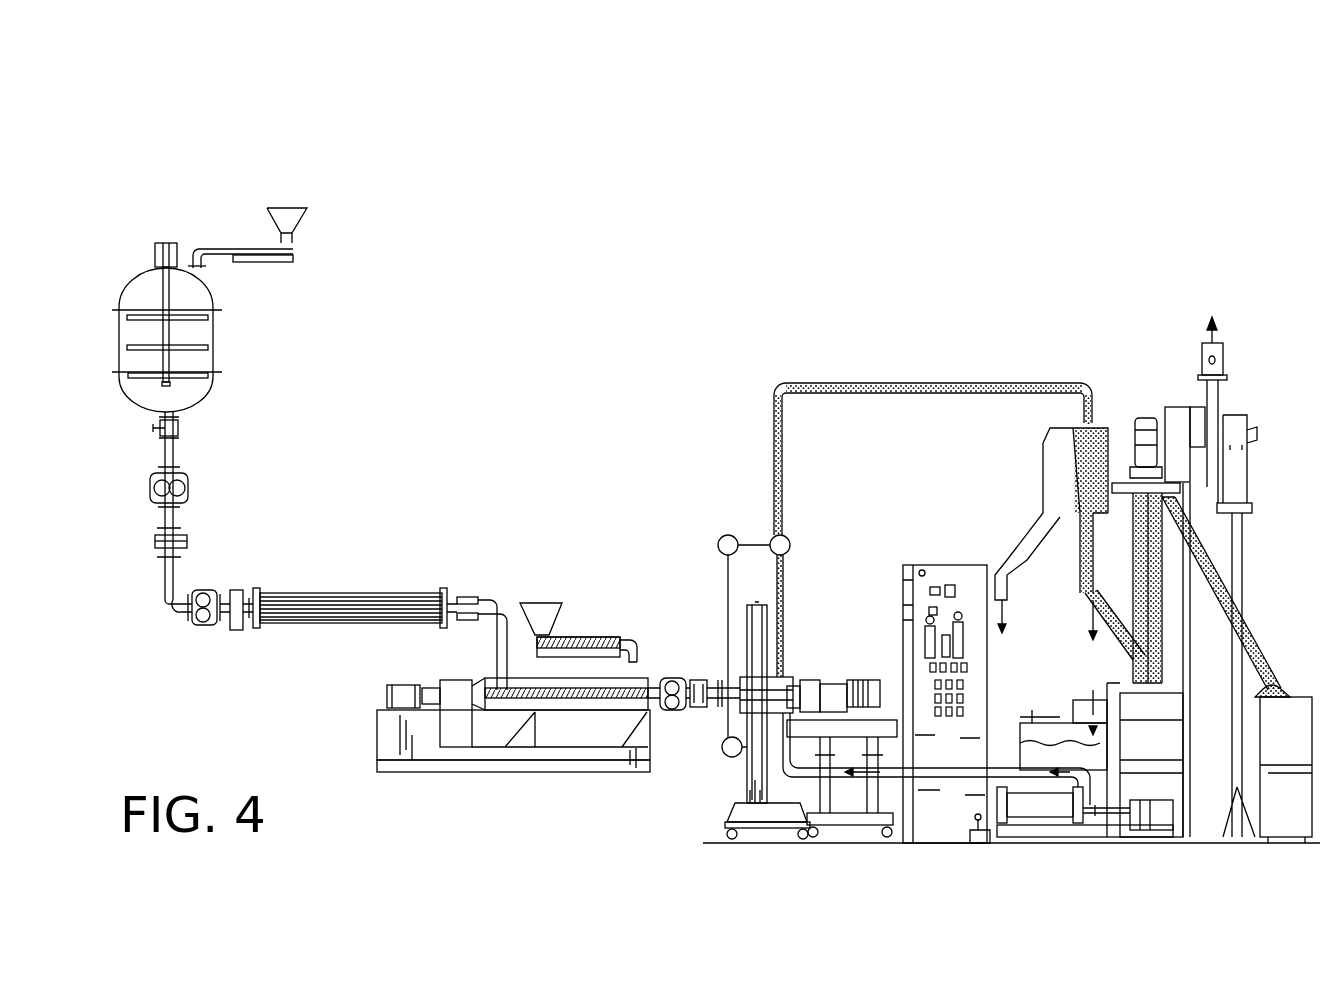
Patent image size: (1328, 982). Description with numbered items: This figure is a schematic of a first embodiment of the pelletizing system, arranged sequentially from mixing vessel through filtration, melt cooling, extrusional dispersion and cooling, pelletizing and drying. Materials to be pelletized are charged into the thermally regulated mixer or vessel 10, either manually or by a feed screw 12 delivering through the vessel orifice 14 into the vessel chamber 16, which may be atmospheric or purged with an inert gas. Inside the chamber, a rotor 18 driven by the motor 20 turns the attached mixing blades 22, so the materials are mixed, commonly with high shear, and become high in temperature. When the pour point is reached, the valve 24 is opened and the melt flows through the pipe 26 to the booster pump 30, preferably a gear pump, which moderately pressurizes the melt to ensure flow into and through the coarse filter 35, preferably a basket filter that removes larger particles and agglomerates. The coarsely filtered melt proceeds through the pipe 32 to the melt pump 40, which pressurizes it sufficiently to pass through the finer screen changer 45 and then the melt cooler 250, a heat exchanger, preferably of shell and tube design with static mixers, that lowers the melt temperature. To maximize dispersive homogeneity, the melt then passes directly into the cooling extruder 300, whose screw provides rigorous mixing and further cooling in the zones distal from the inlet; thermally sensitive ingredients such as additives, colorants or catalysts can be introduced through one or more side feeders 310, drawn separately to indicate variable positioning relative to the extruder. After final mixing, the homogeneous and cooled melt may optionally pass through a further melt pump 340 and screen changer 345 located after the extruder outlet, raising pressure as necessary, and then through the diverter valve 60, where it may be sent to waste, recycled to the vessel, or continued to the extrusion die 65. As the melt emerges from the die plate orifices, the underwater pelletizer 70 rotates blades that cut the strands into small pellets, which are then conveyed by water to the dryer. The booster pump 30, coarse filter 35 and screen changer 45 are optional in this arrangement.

The mixing vessel 10 is at (108, 319).
The feed screw 12 is at (283, 216).
The vessel orifice 14 is at (190, 249).
The vessel chamber 16 is at (150, 397).
The rotor 18 is at (165, 285).
The motor 20 is at (165, 252).
The mixing blades 22 is at (202, 370).
The valve 24 is at (152, 429).
The pipe 26 is at (176, 452).
The booster pump 30 is at (154, 488).
The pipe 32 is at (162, 580).
The coarse filter 35 is at (154, 541).
The melt pump 40 is at (203, 622).
The screen changer 45 is at (236, 590).
The diverter valve 60 is at (727, 808).
The extrusion die 65 is at (770, 665).
The underwater pelletizer 70 is at (860, 680).
The melt cooler 250 is at (353, 598).
The cooling extruder 300 is at (563, 735).
The side feeder 310 is at (577, 640).
The melt pump 340 is at (672, 680).
The screen changer 345 is at (700, 680).